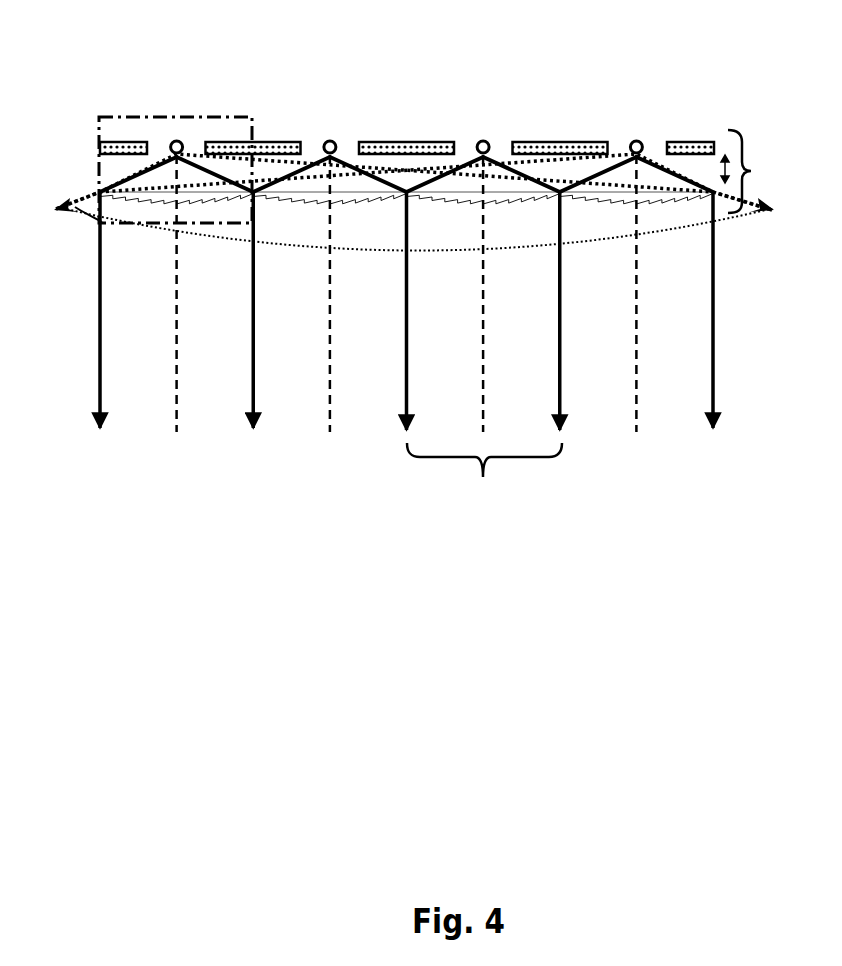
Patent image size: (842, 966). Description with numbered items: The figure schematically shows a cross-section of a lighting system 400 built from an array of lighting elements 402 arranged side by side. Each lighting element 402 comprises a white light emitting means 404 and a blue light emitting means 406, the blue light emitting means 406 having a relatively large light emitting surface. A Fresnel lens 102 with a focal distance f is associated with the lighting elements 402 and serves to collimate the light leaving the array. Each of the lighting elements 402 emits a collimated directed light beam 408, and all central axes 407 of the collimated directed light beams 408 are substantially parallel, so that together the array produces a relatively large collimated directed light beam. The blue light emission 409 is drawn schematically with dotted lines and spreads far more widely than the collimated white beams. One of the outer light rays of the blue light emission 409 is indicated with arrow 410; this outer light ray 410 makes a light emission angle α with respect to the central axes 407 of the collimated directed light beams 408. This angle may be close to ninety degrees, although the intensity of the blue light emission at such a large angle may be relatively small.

The lighting system 400 is at (768, 171).
The lighting element 402 is at (225, 117).
The white light emitting means 404 is at (330, 140).
The blue light emitting means 406 is at (402, 140).
The Fresnel lens 102 is at (170, 201).
The central axis 407 is at (180, 412).
The collimated directed light beam 408 is at (484, 479).
The blue light emission 409 is at (645, 223).
The outer light ray 410 is at (76, 208).